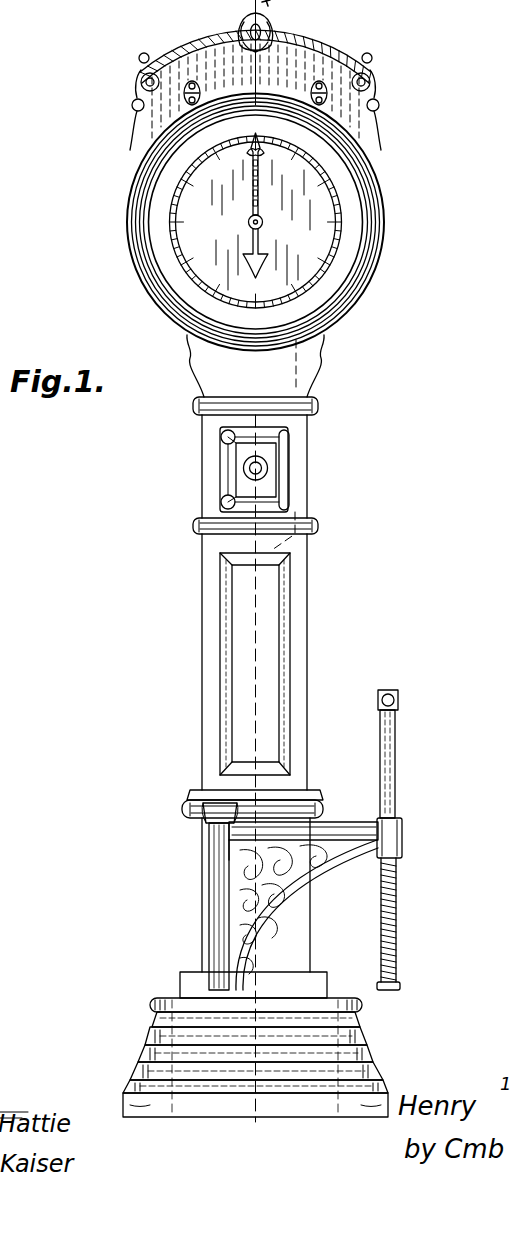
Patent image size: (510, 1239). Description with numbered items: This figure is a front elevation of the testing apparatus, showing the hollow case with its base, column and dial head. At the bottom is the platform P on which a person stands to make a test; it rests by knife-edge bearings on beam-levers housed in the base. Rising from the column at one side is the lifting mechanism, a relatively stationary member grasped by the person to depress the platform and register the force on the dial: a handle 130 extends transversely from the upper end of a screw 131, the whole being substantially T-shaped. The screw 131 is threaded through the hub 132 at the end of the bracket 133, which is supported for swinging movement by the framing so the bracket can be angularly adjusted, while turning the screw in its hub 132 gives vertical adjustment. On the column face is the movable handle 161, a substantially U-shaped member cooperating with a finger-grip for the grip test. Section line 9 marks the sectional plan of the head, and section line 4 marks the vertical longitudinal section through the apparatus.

The section line 9 9 is at (428, 222).
The movable handle 161 is at (286, 456).
The handle 130 is at (399, 700).
The screw 131 is at (396, 770).
The hub 132 is at (403, 838).
The bracket 133 is at (226, 840).
The platform P is at (172, 996).
The section line 4 4 is at (256, 1122).